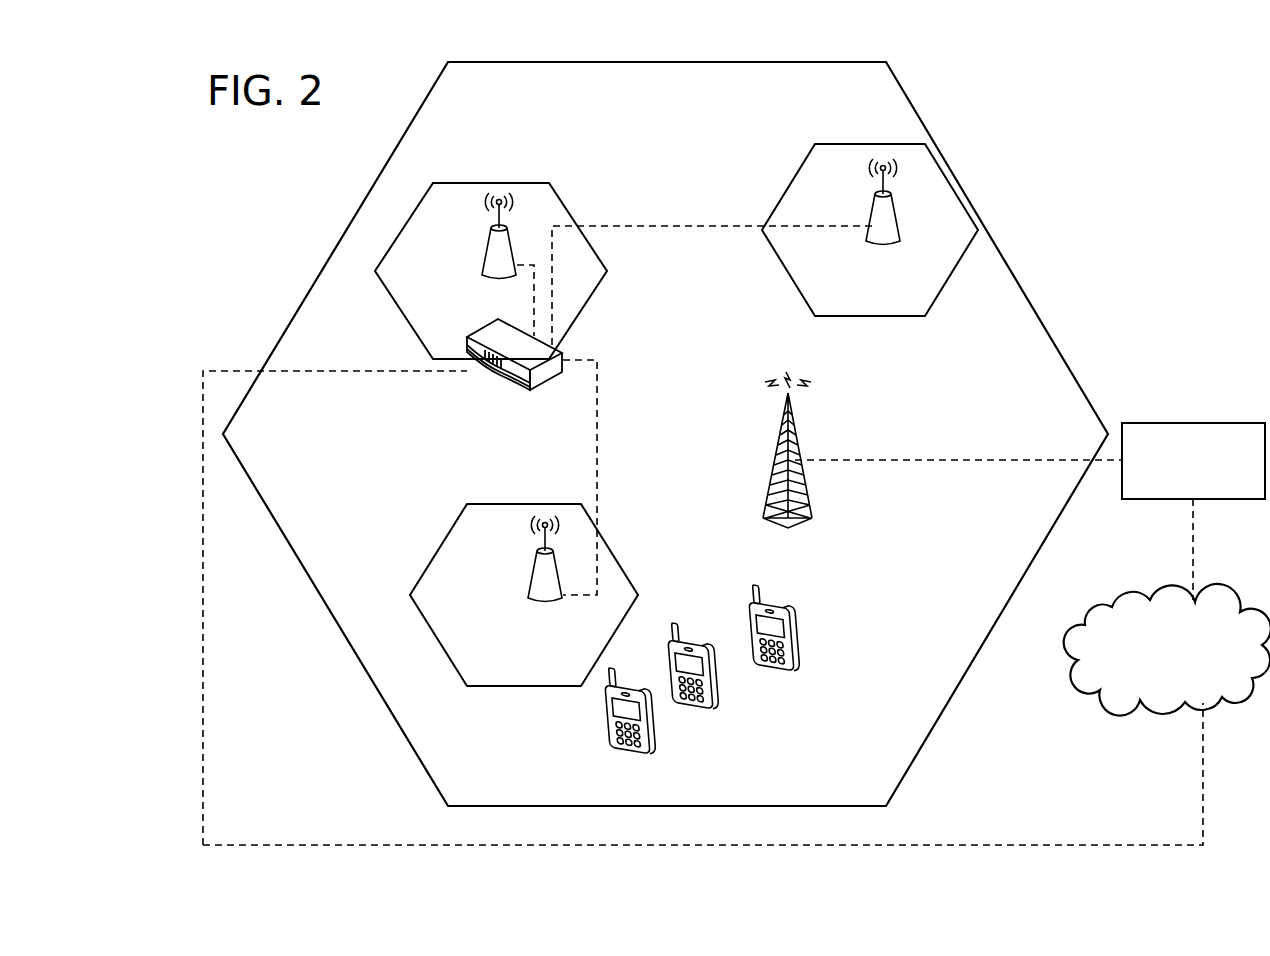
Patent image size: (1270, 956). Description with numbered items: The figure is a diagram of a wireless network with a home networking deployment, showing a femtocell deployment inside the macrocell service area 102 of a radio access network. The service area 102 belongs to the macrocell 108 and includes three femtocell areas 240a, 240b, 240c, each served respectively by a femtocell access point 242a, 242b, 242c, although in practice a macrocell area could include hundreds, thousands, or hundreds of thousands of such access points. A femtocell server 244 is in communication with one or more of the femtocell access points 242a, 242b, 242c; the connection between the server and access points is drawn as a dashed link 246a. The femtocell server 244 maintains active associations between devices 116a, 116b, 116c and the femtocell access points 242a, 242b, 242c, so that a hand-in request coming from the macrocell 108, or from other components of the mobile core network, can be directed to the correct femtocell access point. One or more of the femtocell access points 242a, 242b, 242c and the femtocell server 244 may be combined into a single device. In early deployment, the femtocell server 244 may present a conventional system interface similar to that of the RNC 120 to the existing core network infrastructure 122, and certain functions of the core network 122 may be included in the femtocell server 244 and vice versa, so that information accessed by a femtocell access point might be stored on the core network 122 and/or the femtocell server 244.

The macrocell service area 102 is at (343, 270).
The macrocell 108 is at (763, 522).
The device 116a is at (622, 757).
The device 116b is at (683, 713).
The device 116c is at (765, 678).
The RNC 120 is at (1193, 461).
The core network 122 is at (1166, 588).
The femtocell area 240a is at (614, 533).
The femtocell area 240b is at (939, 305).
The femtocell area 240c is at (547, 166).
The femtocell access point 242a is at (528, 595).
The femtocell access point 242b is at (868, 235).
The femtocell access point 242c is at (485, 268).
The femtocell server 244 is at (493, 373).
The backhaul network connection 246a is at (413, 513).